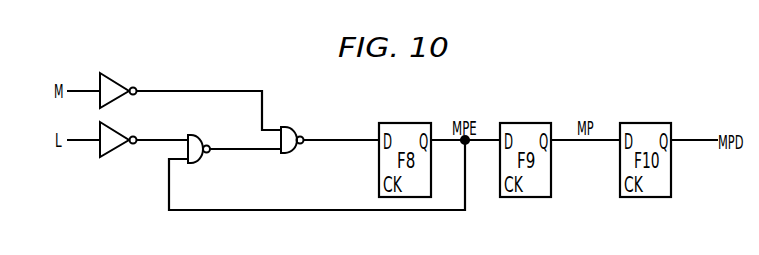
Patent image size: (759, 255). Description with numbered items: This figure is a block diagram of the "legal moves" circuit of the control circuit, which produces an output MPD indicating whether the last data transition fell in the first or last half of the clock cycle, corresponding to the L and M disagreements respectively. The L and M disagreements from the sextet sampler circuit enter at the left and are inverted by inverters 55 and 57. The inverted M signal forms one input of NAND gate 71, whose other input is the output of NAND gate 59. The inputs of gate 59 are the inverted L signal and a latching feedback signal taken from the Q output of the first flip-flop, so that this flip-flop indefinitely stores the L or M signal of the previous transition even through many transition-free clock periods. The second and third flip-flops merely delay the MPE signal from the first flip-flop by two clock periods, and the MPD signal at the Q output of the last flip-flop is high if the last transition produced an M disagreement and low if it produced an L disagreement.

The inverter 55 is at (115, 73).
The inverter 57 is at (117, 122).
The NAND gate 59 is at (198, 135).
The NAND gate 71 is at (292, 127).